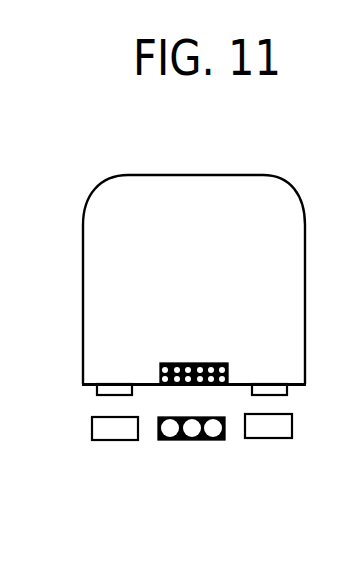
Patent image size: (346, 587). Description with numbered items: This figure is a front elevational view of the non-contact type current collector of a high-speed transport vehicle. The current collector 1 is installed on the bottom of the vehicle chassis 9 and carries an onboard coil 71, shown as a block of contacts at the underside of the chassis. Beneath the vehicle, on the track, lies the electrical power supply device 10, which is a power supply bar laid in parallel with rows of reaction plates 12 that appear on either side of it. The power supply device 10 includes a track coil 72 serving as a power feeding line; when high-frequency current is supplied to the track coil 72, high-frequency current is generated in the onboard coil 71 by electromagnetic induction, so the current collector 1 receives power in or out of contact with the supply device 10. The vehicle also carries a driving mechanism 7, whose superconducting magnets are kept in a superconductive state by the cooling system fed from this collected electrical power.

The vehicle chassis 9 is at (128, 175).
The driving mechanism 7 is at (107, 390).
The current collector 1 is at (177, 363).
The onboard coil 71 is at (210, 363).
The electrical power supply device 10 is at (178, 441).
The track coil 72 is at (214, 441).
The reaction plates 12 is at (115, 433).